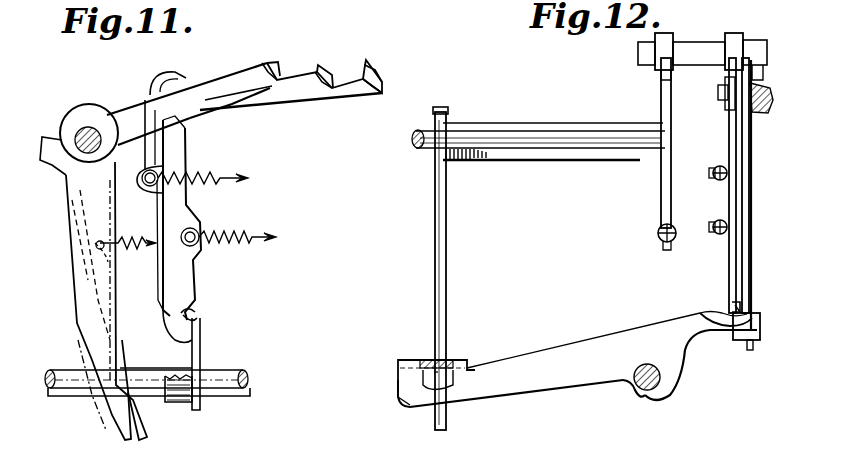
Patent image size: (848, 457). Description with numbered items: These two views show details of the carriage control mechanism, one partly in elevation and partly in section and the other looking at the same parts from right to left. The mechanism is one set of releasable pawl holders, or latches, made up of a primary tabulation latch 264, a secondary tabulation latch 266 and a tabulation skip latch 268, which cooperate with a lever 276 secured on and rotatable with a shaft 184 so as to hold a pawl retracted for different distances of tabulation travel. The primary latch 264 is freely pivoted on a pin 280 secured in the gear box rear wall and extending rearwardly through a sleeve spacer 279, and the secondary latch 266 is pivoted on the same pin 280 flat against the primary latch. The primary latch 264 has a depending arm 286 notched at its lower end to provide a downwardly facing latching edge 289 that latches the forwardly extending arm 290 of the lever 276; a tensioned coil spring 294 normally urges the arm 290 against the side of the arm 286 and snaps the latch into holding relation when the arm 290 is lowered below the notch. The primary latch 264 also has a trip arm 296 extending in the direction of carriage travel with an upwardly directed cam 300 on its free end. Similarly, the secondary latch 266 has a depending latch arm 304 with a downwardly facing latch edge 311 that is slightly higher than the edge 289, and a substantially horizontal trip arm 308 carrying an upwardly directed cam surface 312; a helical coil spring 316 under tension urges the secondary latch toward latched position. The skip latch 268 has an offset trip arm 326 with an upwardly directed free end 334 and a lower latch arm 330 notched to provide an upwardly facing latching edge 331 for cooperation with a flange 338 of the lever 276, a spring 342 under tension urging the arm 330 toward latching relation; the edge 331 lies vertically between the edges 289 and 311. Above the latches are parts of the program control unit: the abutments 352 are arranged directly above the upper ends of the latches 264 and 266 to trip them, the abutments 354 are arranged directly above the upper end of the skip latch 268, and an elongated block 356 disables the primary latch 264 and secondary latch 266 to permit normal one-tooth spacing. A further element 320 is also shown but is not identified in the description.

In FIG. 11, the shaft 184 is at (240, 375).
In FIG. 12, the shaft 184 is at (630, 392).
In FIG. 11, the primary tabulation latch 264 is at (180, 72).
In FIG. 12, the primary tabulation latch 264 is at (728, 116).
In FIG. 11, the secondary tabulation latch 266 is at (205, 78).
In FIG. 12, the secondary tabulation latch 266 is at (732, 133).
In FIG. 11, the tabulation skip latch 268 is at (66, 120).
In FIG. 12, the tabulation skip latch 268 is at (445, 112).
In FIG. 11, the lever 276 is at (200, 408).
In FIG. 12, the lever 276 is at (543, 388).
In FIG. 12, the sleeve spacer 279 is at (762, 40).
In FIG. 11, the pin 280 is at (160, 88).
In FIG. 12, the pin 280 is at (718, 92).
In FIG. 11, the depending arm 286 is at (157, 240).
In FIG. 12, the depending arm 286 is at (742, 280).
In FIG. 11, the latching edge 289 is at (198, 320).
In FIG. 12, the latching edge 289 is at (700, 314).
In FIG. 11, the forwardly extending arm 290 is at (200, 342).
In FIG. 12, the forwardly extending arm 290 is at (707, 331).
In FIG. 11, the coil spring 294 is at (212, 170).
In FIG. 12, the coil spring 294 is at (718, 180).
In FIG. 11, the trip arm 296 is at (363, 64).
In FIG. 11, the cam 300 is at (382, 70).
In FIG. 11, the depending latch arm 304 is at (192, 268).
In FIG. 12, the depending latch arm 304 is at (738, 264).
In FIG. 11, the trip arm 308 is at (290, 100).
In FIG. 11, the latch edge 311 is at (196, 312).
In FIG. 12, the latch edge 311 is at (735, 306).
In FIG. 11, the cam surface 312 is at (318, 64).
In FIG. 11, the helical coil spring 316 is at (220, 230).
In FIG. 12, the helical coil spring 316 is at (722, 234).
In FIG. 12, the rod 320 is at (535, 128).
In FIG. 11, the offset trip arm 326 is at (248, 100).
In FIG. 12, the offset trip arm 326 is at (660, 98).
In FIG. 11, the lower latch arm 330 is at (80, 365).
In FIG. 12, the lower latch arm 330 is at (447, 284).
In FIG. 11, the latching edge 331 is at (123, 372).
In FIG. 12, the latching edge 331 is at (402, 395).
In FIG. 11, the free end 334 is at (265, 62).
In FIG. 11, the flange 338 is at (150, 395).
In FIG. 12, the flange 338 is at (428, 360).
In FIG. 11, the spring 342 is at (128, 245).
In FIG. 12, the spring 342 is at (657, 233).
In FIG. 12, the abutments 352 is at (728, 40).
In FIG. 12, the abutments 354 is at (668, 36).
In FIG. 12, the elongated block 356 is at (638, 52).